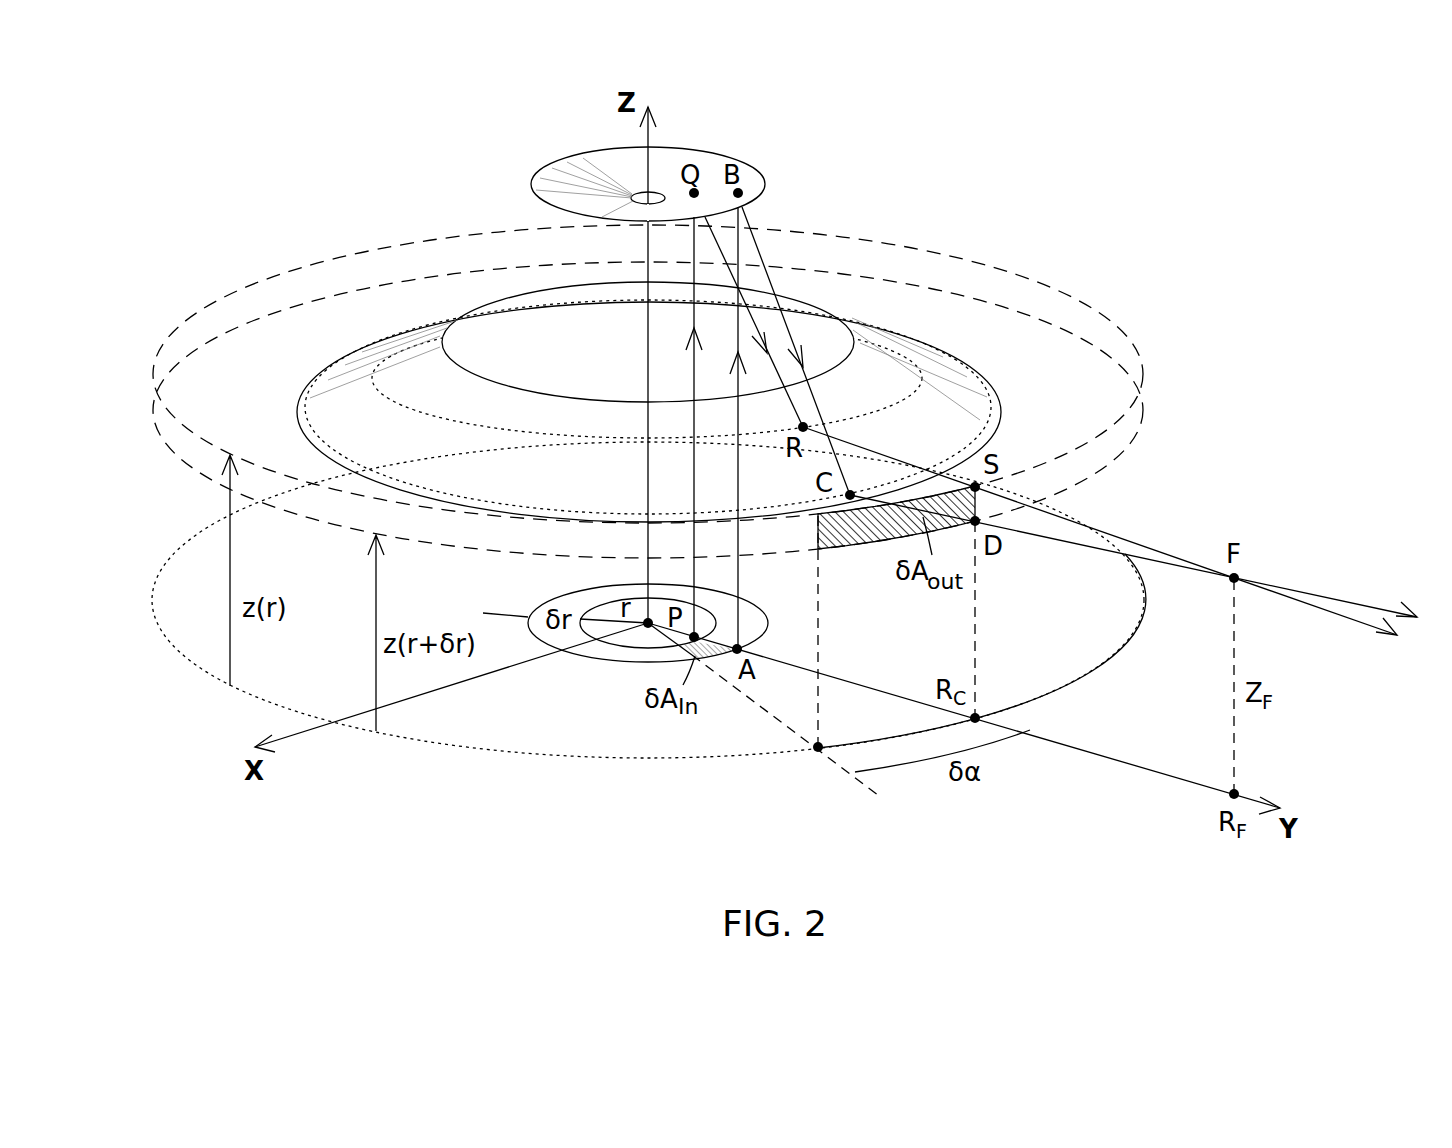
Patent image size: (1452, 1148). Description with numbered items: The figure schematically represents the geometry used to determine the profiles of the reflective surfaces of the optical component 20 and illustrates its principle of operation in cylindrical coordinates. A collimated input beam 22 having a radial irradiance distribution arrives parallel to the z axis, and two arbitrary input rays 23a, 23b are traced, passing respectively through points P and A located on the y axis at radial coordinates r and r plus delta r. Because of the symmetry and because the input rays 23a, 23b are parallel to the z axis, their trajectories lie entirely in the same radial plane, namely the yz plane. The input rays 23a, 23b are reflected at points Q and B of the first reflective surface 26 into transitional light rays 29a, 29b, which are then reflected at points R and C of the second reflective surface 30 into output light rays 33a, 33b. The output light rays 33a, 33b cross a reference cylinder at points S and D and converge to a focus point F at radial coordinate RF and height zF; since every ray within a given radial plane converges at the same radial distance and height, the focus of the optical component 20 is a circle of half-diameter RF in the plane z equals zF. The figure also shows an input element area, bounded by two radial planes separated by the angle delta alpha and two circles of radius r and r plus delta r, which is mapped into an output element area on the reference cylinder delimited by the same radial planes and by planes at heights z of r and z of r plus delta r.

The optical component 20 is at (830, 140).
The collimated input beam 22 is at (648, 770).
The input ray 23a is at (695, 577).
The input ray 23b is at (738, 622).
The first reflective surface 26 is at (542, 175).
The transitional light ray 29a is at (737, 285).
The transitional light ray 29b is at (778, 295).
The second reflective surface 30 is at (393, 337).
The output light ray 33a is at (1122, 540).
The output light ray 33b is at (1162, 563).